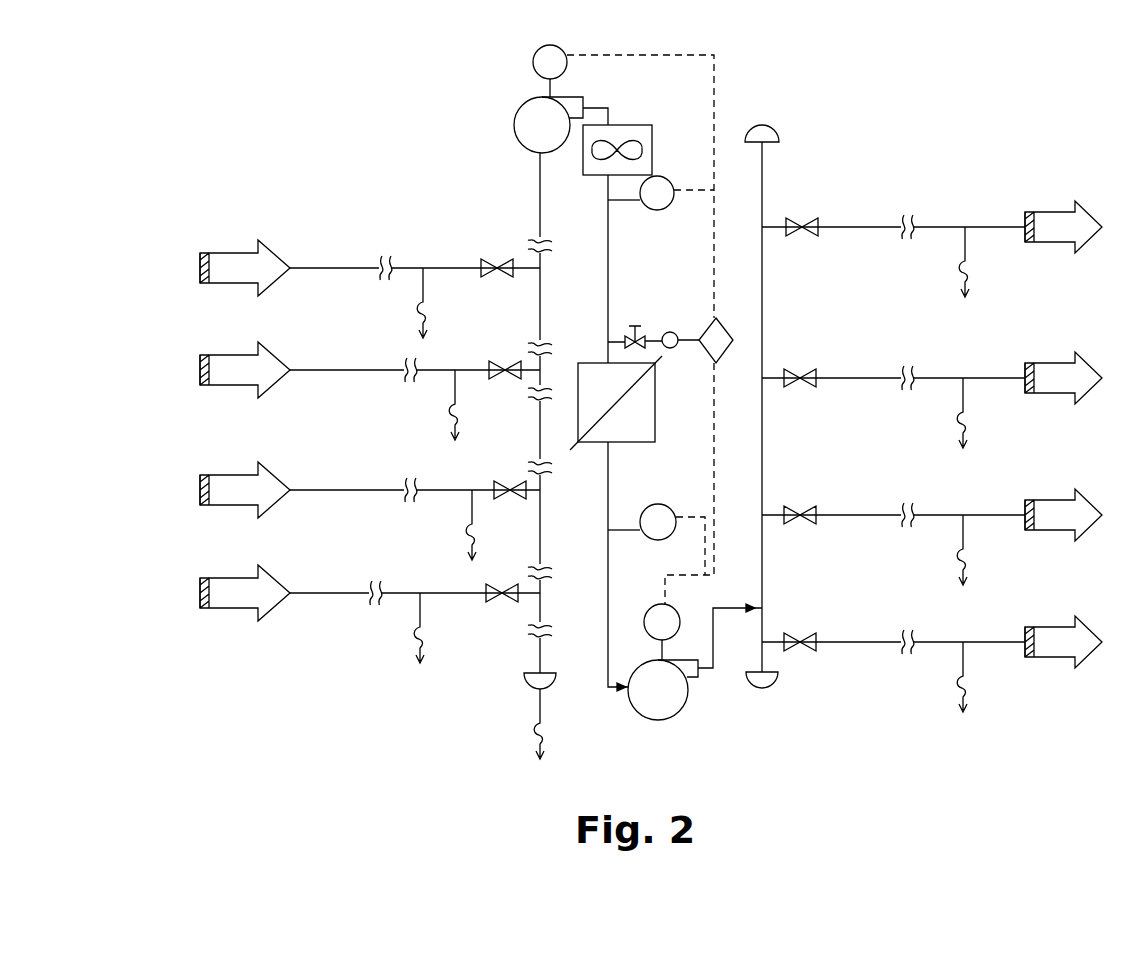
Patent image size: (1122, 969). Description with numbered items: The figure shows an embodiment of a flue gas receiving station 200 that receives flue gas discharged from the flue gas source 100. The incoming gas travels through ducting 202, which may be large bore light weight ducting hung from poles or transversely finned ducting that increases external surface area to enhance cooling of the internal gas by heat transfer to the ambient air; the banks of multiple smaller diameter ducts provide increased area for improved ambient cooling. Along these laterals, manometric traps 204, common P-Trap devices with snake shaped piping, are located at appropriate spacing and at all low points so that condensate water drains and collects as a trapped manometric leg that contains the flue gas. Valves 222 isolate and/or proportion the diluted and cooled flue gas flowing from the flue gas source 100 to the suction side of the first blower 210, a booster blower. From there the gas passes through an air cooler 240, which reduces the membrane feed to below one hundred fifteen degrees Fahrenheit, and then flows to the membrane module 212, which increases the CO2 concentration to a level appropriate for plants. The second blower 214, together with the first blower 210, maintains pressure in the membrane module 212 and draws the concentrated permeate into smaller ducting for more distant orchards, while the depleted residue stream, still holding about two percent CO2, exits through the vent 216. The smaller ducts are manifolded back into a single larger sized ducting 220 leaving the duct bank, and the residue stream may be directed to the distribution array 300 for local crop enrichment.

The flue gas receiving station 200 is at (240, 130).
The flue gas source 100 is at (245, 430).
The ducting 202 is at (402, 395).
The manometric traps 204 is at (704, 493).
The first blower 210 is at (500, 122).
The membrane module 212 is at (622, 280).
The second blower 214 is at (683, 718).
The vent 216 is at (682, 358).
The ducting 220 is at (893, 395).
The valves 222 is at (652, 404).
The air cooler 240 is at (632, 120).
The distribution array 300 is at (1063, 434).